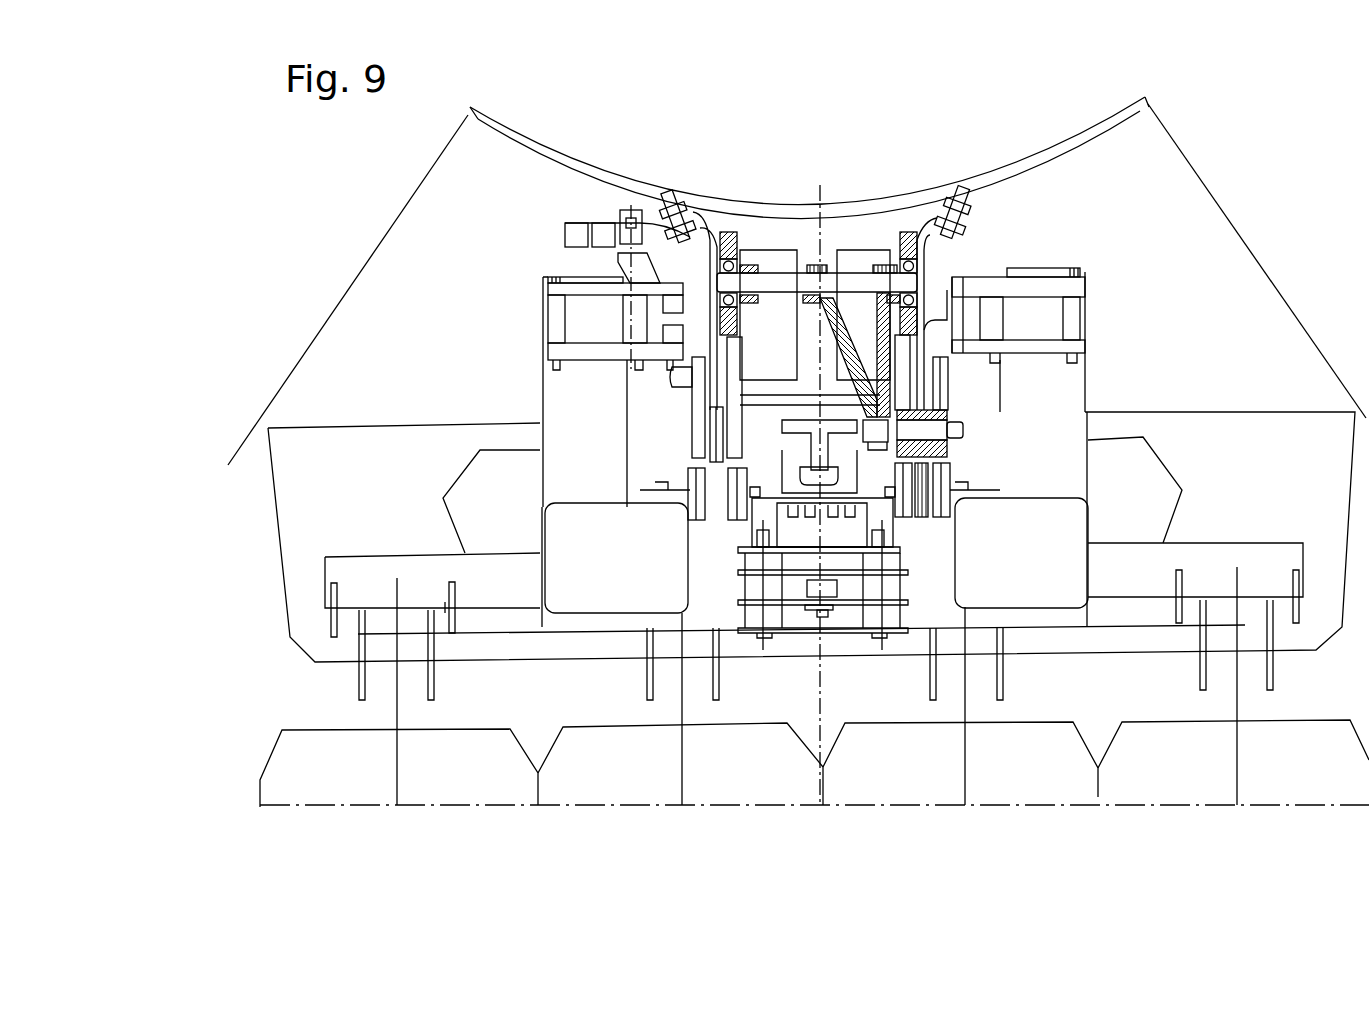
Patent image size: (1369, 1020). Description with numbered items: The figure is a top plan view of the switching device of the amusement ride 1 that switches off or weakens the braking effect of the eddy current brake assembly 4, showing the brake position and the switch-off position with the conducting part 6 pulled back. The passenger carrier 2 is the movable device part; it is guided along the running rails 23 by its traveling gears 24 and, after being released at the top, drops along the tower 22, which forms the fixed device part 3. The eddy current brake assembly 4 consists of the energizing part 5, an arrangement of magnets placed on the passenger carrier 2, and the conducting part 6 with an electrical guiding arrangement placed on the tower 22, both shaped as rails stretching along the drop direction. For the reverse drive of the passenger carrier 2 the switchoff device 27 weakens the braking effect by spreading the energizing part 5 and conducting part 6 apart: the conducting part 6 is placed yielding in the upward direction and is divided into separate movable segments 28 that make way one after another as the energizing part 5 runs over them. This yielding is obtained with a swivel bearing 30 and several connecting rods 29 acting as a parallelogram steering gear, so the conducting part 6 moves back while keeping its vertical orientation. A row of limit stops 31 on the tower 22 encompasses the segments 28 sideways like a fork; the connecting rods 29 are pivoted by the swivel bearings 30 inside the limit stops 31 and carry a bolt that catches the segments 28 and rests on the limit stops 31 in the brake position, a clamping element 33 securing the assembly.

The track maintenance machine housing 1 is at (1200, 112).
The passenger carrier 2 is at (640, 778).
The fixed device part 3 is at (809, 158).
The tower 22 is at (1022, 170).
The eddy current brake assembly 4 is at (736, 186).
The energizing part 5 is at (687, 518).
The conducting part 6 is at (799, 502).
The segments 28 is at (713, 427).
The running rails 23 is at (966, 302).
The traveling gears 24 is at (545, 366).
The switchoff device 27 is at (1052, 258).
The connecting rods 29 is at (817, 262).
The swivel bearing 30 is at (853, 270).
The limit stops 31 is at (705, 420).
The clamping nut 33 is at (947, 453).